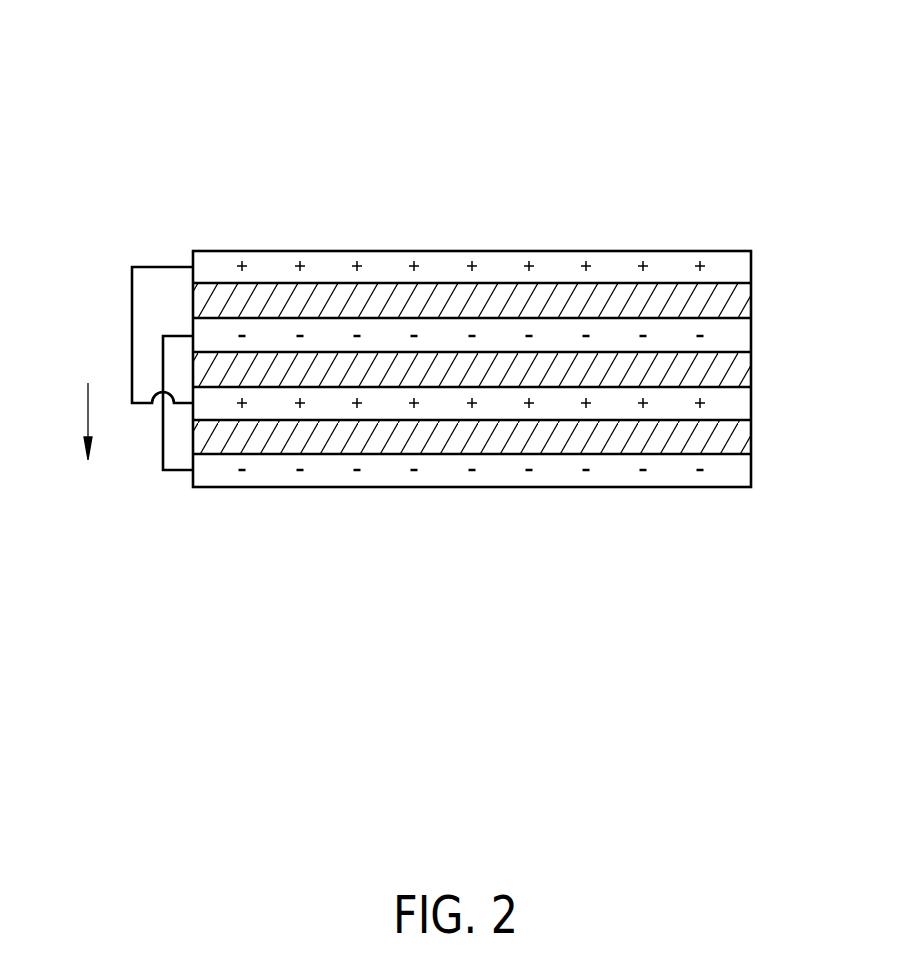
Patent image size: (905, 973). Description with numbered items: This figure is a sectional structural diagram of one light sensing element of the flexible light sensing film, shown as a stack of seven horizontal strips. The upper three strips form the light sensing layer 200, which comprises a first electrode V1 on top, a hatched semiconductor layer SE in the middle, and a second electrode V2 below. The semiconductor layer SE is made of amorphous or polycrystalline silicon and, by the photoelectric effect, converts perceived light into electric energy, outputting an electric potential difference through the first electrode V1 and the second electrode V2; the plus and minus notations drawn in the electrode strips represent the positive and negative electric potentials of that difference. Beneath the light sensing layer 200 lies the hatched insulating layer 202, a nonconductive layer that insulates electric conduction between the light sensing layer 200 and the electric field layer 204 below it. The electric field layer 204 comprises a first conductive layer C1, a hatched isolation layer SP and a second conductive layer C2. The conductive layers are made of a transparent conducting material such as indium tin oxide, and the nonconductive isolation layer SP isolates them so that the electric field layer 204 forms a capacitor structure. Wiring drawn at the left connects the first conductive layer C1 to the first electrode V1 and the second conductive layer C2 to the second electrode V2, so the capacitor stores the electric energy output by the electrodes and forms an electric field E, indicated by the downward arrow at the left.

The light sensing layer 200 is at (760, 251).
The insulating layer 202 is at (735, 372).
The electric field layer 204 is at (760, 387).
The first electrode V1 is at (442, 268).
The semiconductor layer SE is at (503, 310).
The second electrode V2 is at (562, 335).
The first conductive layer C1 is at (332, 402).
The isolation layer SP is at (390, 427).
The second conductive layer C2 is at (452, 470).
The electric field E is at (76, 421).